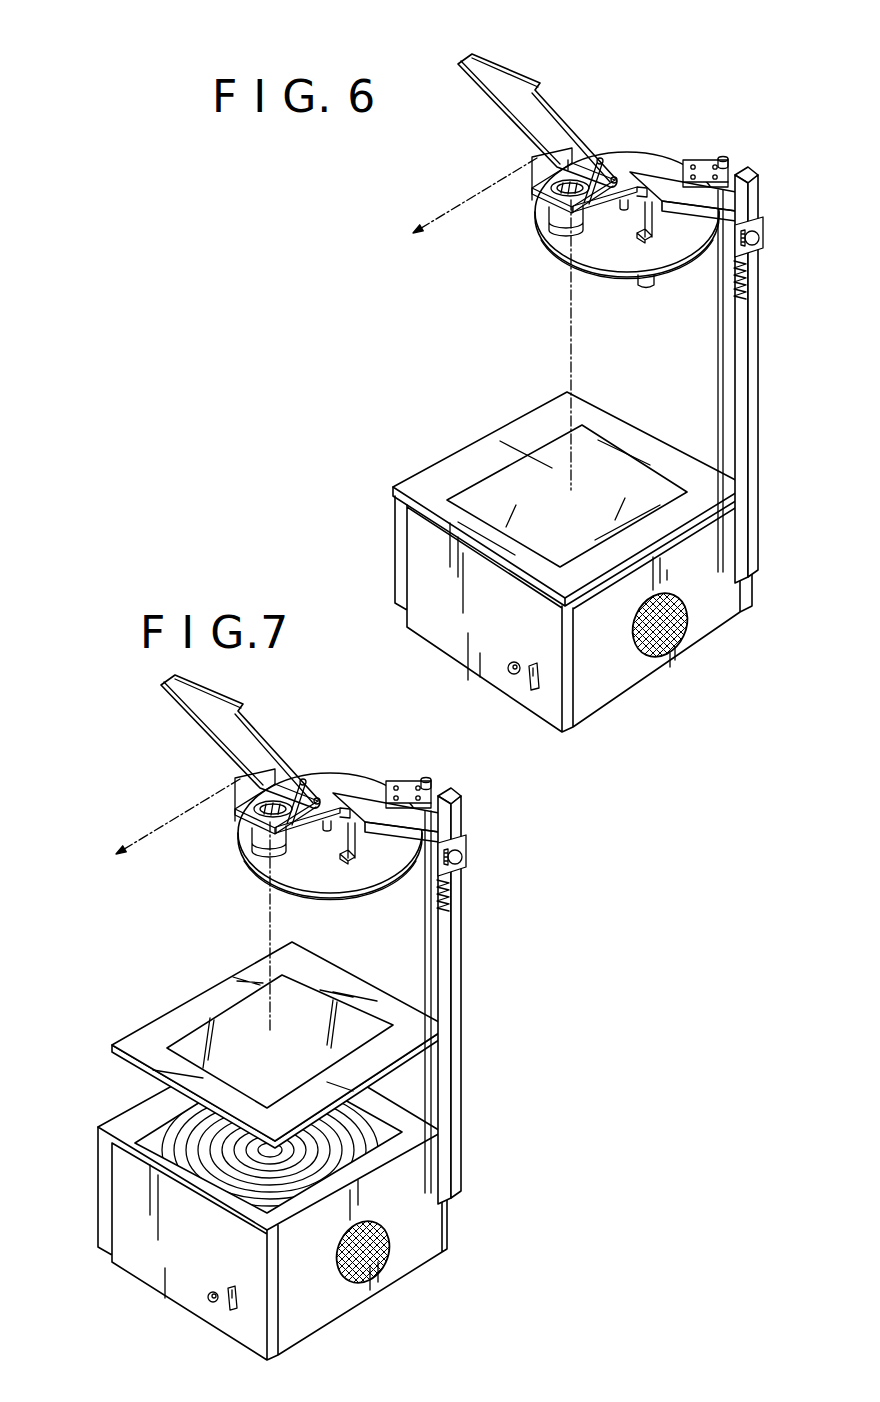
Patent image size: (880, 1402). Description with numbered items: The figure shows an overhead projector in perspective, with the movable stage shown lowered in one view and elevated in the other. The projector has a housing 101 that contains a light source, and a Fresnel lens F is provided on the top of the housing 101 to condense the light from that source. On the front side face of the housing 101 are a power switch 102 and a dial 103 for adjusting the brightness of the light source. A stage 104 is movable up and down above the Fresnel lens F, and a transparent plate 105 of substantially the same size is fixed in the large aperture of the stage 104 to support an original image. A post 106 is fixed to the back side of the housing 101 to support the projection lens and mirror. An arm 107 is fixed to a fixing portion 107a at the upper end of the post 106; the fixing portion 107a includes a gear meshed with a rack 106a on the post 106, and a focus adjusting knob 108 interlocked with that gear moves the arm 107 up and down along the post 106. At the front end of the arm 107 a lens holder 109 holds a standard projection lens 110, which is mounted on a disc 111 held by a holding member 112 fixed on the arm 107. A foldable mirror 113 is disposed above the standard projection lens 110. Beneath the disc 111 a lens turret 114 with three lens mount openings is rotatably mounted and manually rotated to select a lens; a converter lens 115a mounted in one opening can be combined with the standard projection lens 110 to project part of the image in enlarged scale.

In FIG. 6, the housing 101 is at (716, 600).
In FIG. 7, the housing 101 is at (142, 1265).
In FIG. 6, the power switch 102 is at (536, 663).
In FIG. 7, the power switch 102 is at (232, 1287).
In FIG. 6, the dial 103 is at (510, 663).
In FIG. 7, the dial 103 is at (207, 1297).
In FIG. 6, the stage 104 is at (462, 470).
In FIG. 7, the stage 104 is at (188, 1005).
In FIG. 6, the transparent plate 105 is at (541, 466).
In FIG. 7, the transparent plate 105 is at (352, 1023).
In FIG. 6, the post 106 is at (750, 346).
In FIG. 7, the post 106 is at (480, 996).
In FIG. 6, the rack 106a is at (745, 279).
In FIG. 7, the rack 106a is at (492, 897).
In FIG. 6, the arm 107 is at (660, 172).
In FIG. 7, the arm 107 is at (374, 777).
In FIG. 6, the fixing portion 107a is at (762, 216).
In FIG. 7, the fixing portion 107a is at (492, 838).
In FIG. 6, the focus adjusting knob 108 is at (760, 236).
In FIG. 7, the focus adjusting knob 108 is at (491, 858).
In FIG. 6, the lens holder 109 is at (607, 205).
In FIG. 7, the lens holder 109 is at (313, 830).
In FIG. 6, the standard projection lens 110 is at (557, 222).
In FIG. 7, the standard projection lens 110 is at (244, 821).
In FIG. 6, the disc 111 is at (613, 260).
In FIG. 7, the disc 111 is at (330, 855).
In FIG. 6, the holding member 112 is at (652, 213).
In FIG. 7, the holding member 112 is at (360, 844).
In FIG. 6, the foldable mirror 113 is at (522, 113).
In FIG. 7, the foldable mirror 113 is at (224, 748).
In FIG. 6, the lens turret 114 is at (688, 270).
In FIG. 7, the lens turret 114 is at (330, 897).
In FIG. 6, the converter lens 115a is at (648, 290).
In FIG. 7, the Fresnel lens F is at (175, 1142).